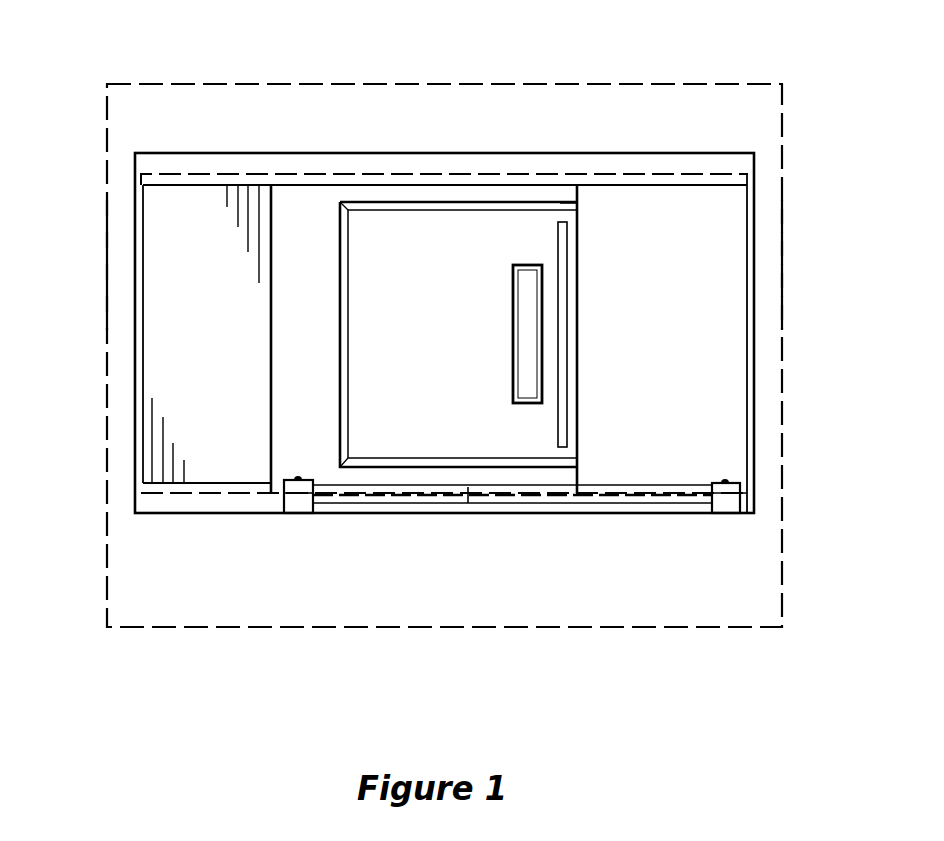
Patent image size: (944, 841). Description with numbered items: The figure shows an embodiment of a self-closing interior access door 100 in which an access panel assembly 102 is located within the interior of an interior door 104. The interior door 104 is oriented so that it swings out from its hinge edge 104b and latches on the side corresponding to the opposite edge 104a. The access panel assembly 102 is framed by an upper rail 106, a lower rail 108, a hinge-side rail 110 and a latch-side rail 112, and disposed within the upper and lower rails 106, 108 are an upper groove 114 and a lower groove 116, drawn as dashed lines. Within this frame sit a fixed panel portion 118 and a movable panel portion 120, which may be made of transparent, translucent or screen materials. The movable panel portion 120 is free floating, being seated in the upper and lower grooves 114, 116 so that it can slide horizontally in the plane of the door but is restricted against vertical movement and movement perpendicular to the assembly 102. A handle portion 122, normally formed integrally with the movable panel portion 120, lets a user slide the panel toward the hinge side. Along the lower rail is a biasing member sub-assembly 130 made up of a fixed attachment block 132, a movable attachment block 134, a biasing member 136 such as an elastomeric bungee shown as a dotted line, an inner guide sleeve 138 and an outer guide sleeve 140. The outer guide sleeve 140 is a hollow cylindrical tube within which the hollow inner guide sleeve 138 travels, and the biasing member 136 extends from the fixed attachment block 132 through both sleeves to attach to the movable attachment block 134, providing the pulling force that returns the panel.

The self-closing interior access door 100 is at (627, 40).
The access panel assembly 102 is at (465, 140).
The interior door 104 is at (137, 84).
The latch edge 104a is at (782, 265).
The hinge edge 104b is at (107, 305).
The upper rail 106 is at (203, 165).
The lower rail 108 is at (230, 508).
The hinge-side rail 110 is at (138, 232).
The latch-side rail 112 is at (748, 260).
The upper groove 114 is at (273, 185).
The lower groove 116 is at (205, 493).
The fixed panel portion 118 is at (207, 334).
The movable panel portion 120 is at (458, 339).
The handle portion 122 is at (528, 385).
The biasing member sub-assembly 130 is at (565, 515).
The fixed attachment block 132 is at (742, 513).
The movable attachment block 134 is at (298, 508).
The biasing member 136 is at (607, 497).
The inner guide sleeve 138 is at (420, 503).
The outer guide sleeve 140 is at (540, 503).